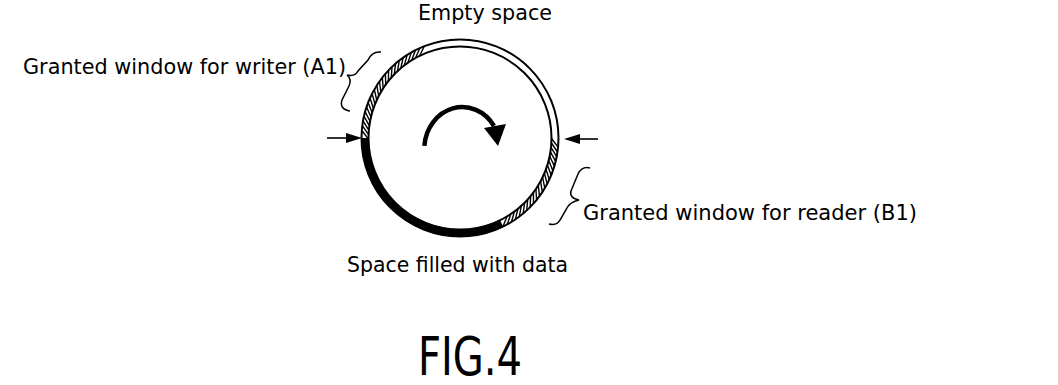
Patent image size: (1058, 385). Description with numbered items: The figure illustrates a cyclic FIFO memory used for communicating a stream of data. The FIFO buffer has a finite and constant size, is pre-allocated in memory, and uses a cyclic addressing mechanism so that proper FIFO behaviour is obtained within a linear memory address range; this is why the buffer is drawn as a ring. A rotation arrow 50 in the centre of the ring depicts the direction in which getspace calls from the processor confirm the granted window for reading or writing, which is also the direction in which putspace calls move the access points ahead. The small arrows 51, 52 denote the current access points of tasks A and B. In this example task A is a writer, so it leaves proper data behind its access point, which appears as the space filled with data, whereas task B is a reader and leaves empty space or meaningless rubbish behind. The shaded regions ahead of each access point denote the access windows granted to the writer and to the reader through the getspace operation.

The rotation arrow 50 is at (465, 109).
The access point arrow of task A 51 is at (312, 130).
The access point arrow of task B 52 is at (619, 140).